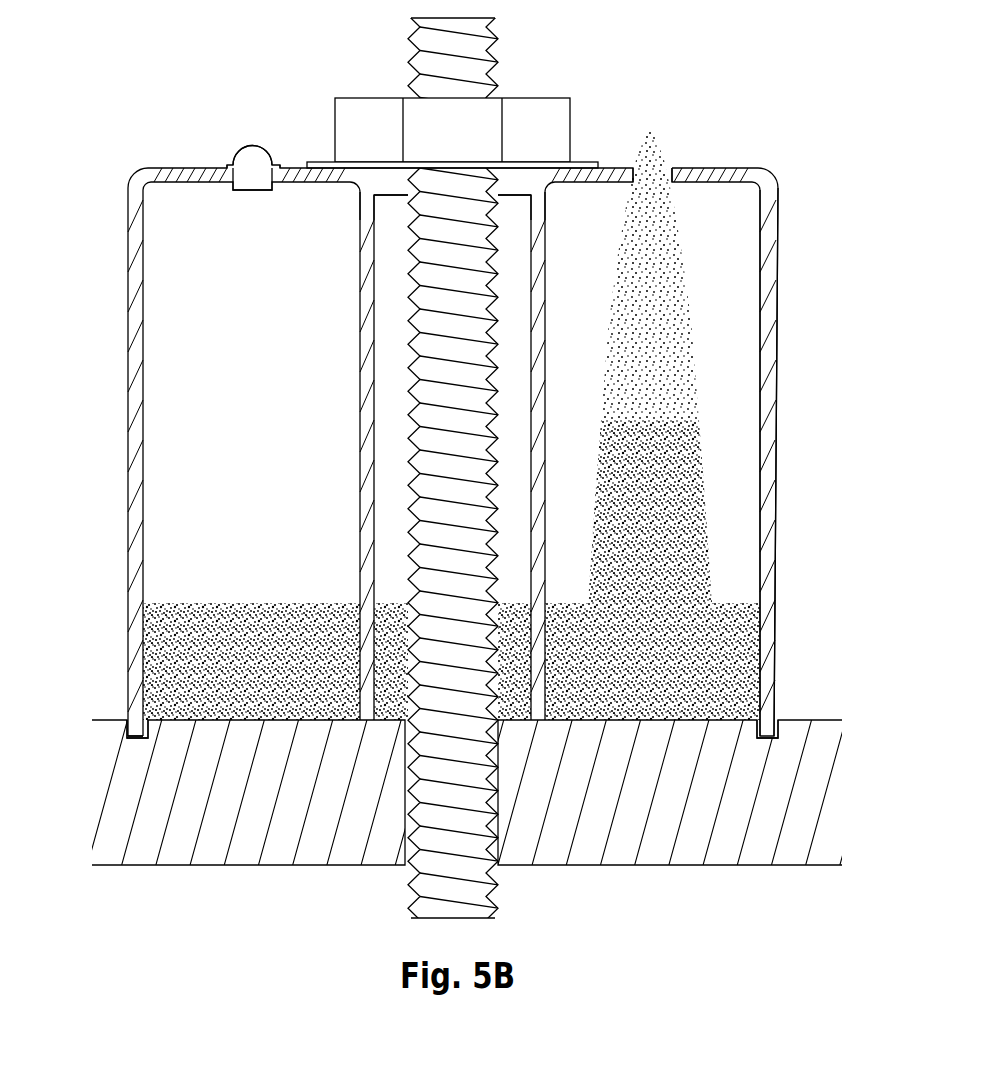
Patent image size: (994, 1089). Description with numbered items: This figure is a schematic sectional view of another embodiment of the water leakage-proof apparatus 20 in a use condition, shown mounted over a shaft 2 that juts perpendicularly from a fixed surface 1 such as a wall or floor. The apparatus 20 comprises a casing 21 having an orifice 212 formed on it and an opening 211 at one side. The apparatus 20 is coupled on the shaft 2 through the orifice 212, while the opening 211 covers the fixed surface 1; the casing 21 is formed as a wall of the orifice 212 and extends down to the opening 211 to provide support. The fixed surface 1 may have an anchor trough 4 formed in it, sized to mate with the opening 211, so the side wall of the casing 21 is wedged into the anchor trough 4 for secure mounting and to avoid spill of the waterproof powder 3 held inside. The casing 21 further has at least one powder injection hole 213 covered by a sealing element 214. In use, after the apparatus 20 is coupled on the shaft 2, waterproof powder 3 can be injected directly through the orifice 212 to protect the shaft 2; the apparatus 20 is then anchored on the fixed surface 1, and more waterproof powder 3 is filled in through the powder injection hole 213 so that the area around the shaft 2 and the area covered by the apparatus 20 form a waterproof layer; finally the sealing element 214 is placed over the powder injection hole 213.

The fixed surface 1 is at (808, 793).
The shaft 2 is at (478, 48).
The waterproof powder 3 is at (745, 625).
The anchor trough 4 is at (780, 719).
The water leakage-proof apparatus 20 is at (431, 399).
The casing 21 is at (770, 362).
The opening 211 is at (132, 718).
The orifice 212 is at (390, 193).
The powder injection hole 213 is at (232, 172).
The sealing element 214 is at (255, 155).